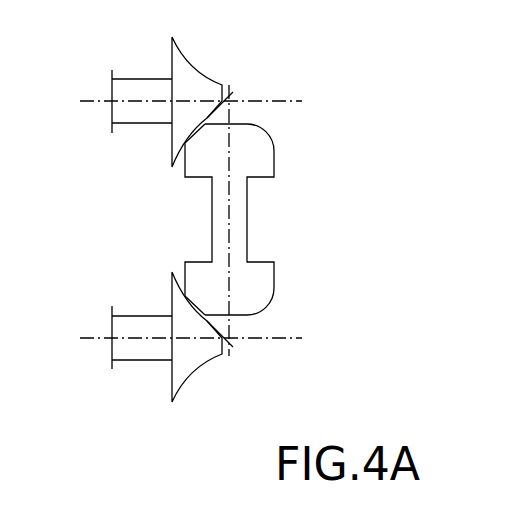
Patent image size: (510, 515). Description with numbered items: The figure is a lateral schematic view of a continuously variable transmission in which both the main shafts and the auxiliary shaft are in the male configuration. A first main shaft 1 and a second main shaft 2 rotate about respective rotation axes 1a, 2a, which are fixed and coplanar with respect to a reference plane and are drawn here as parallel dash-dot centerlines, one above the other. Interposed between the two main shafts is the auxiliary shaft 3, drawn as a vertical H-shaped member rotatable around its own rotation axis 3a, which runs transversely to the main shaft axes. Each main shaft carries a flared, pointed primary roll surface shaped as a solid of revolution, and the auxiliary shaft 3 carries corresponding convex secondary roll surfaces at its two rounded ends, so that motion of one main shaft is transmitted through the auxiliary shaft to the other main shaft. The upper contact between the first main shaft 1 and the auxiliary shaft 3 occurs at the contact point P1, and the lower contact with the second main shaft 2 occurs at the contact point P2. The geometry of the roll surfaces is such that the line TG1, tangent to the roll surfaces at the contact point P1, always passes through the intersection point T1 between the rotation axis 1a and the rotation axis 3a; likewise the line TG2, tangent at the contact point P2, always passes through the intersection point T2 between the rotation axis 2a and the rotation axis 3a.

The first main shaft 1 is at (140, 125).
The rotation axis of the first main shaft 1a is at (120, 102).
The second main shaft 2 is at (140, 315).
The rotation axis of the second main shaft 2a is at (142, 339).
The auxiliary shaft 3 is at (250, 217).
The rotation axis of the auxiliary shaft 3a is at (229, 251).
The intersection point T1 is at (233, 92).
The intersection point T2 is at (235, 347).
The contact point P1 is at (197, 135).
The contact point P2 is at (198, 300).
The tangent line TG1 is at (208, 116).
The tangent line TG2 is at (215, 331).